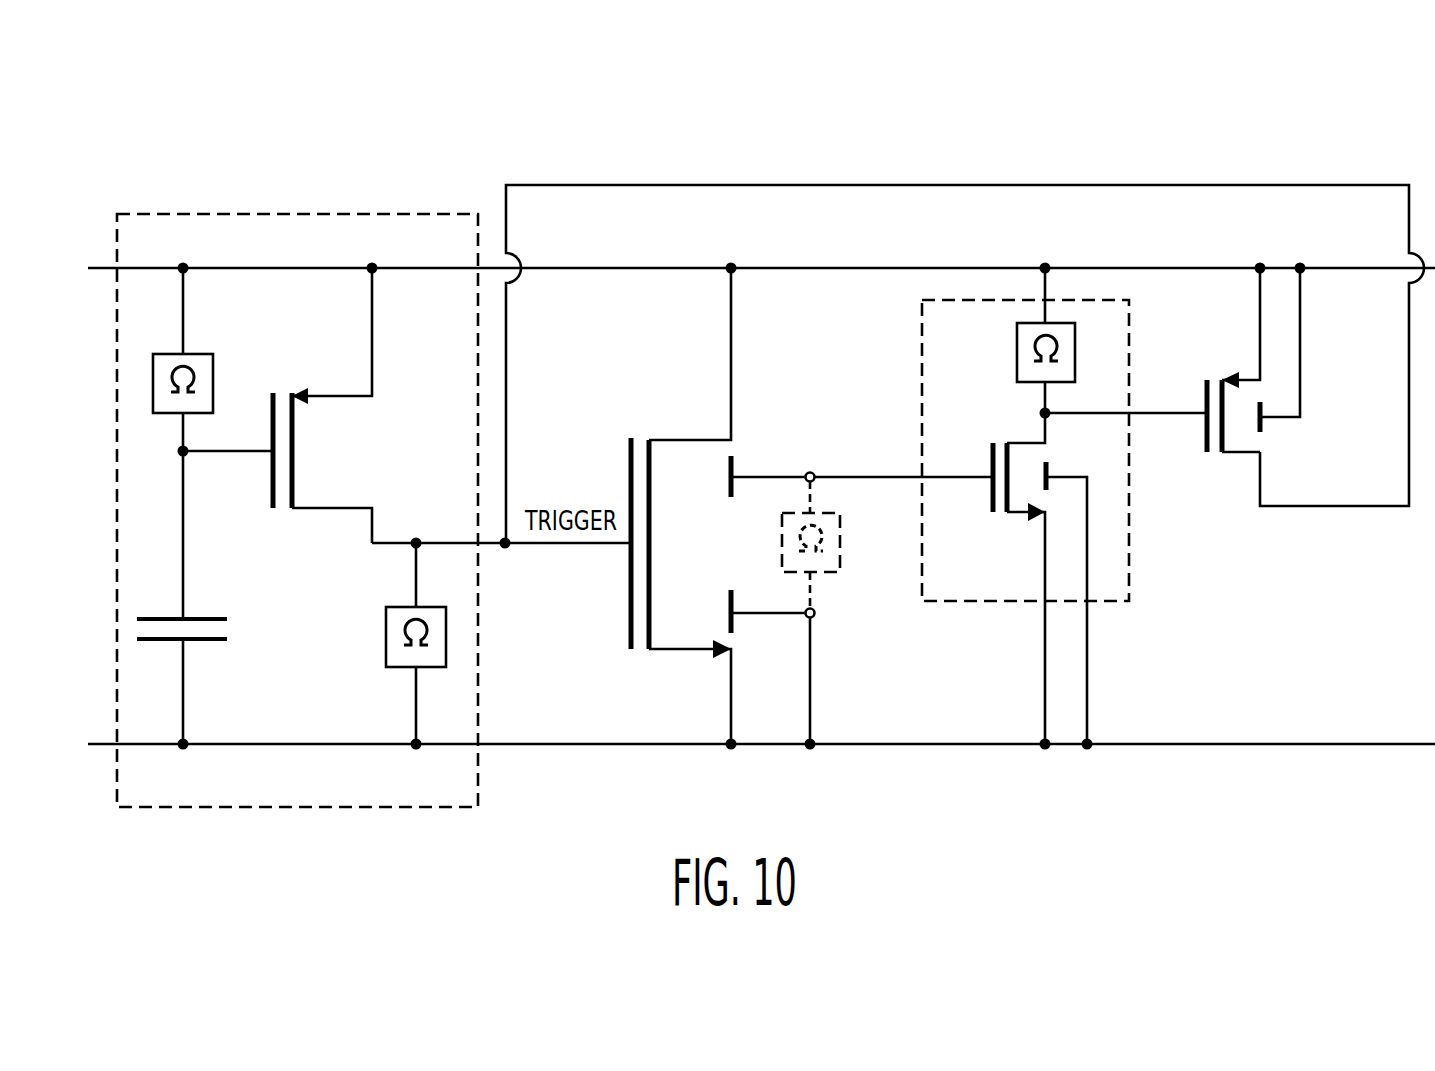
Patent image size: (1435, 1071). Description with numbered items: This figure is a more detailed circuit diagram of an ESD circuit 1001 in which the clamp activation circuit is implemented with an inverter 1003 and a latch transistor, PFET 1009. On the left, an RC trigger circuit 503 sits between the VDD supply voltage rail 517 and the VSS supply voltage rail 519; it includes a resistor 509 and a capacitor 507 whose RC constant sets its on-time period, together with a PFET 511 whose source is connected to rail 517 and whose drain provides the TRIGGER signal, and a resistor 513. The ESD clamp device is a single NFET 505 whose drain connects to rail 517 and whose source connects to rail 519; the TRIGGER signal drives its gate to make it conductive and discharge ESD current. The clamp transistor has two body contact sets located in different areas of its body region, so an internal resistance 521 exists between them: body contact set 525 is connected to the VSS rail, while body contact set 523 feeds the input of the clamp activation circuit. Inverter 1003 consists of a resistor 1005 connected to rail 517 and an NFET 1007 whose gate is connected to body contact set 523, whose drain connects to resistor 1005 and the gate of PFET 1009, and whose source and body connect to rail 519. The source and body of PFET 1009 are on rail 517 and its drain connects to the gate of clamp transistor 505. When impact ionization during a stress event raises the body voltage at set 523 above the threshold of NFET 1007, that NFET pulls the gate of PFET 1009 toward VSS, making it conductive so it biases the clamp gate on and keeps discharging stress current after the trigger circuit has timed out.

The circuit 1001 is at (186, 152).
The trigger circuit 503 is at (378, 212).
The NFET 505 is at (631, 462).
The capacitor 507 is at (208, 642).
The resistor 509 is at (213, 390).
The PFET 511 is at (292, 452).
The resistor 513 is at (386, 640).
The VDD supply voltage rail 517 is at (693, 268).
The VSS supply voltage rail 519 is at (667, 744).
The internal resistance 521 is at (840, 562).
The body contact set 523 is at (731, 459).
The body contact set 525 is at (731, 606).
The inverter 1003 is at (1129, 568).
The resistor 1005 is at (1017, 356).
The NFET 1007 is at (993, 500).
The PFET 1009 is at (1207, 396).